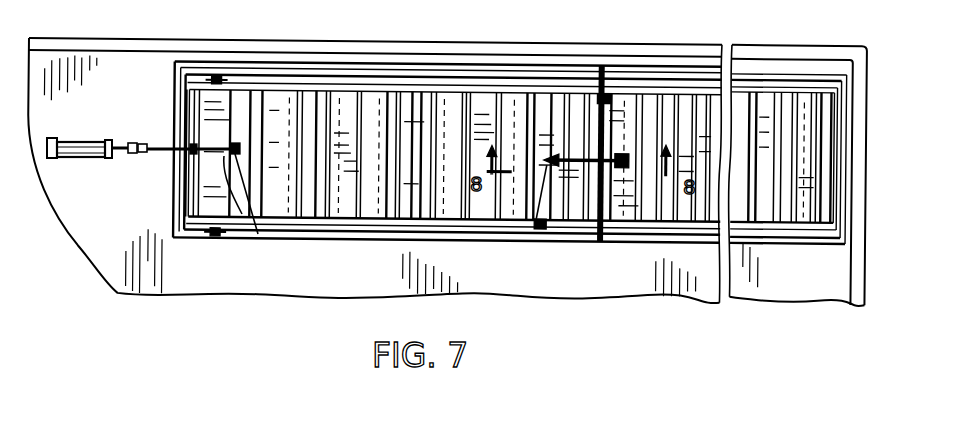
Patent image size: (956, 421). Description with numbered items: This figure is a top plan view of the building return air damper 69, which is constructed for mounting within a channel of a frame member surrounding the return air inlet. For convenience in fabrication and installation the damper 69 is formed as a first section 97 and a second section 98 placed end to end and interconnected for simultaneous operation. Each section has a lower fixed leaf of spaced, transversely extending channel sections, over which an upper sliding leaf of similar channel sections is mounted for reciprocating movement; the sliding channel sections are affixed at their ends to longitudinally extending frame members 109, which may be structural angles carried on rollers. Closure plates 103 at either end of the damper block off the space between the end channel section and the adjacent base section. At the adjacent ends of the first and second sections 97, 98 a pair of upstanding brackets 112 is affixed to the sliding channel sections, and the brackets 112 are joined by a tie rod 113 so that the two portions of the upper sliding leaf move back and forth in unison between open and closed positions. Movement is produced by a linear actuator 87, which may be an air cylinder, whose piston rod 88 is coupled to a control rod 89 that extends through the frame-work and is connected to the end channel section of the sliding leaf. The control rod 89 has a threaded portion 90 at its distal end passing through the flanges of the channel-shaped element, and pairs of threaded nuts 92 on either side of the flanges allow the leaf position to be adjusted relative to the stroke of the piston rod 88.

The damper 69 is at (364, 247).
The linear actuator 87 is at (79, 158).
The piston rod 88 is at (112, 140).
The control rod 89 is at (166, 156).
The threaded portion 90 is at (213, 147).
The threaded nuts 92 is at (258, 234).
The first section 97 is at (452, 72).
The second section 98 is at (685, 66).
The closure plates 103 is at (195, 97).
The frame members 109 is at (219, 73).
The upstanding brackets 112 is at (607, 90).
The tie rod 113 is at (579, 233).